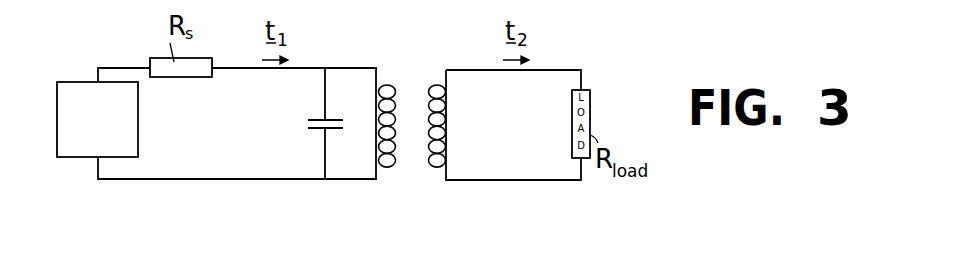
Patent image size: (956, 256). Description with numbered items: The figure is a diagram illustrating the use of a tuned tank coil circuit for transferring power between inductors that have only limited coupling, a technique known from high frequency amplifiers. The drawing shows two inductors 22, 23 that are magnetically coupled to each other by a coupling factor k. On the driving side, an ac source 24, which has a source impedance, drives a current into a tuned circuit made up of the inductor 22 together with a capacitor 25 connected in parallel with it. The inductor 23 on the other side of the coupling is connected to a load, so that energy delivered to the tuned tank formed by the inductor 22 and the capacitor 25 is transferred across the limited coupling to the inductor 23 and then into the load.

The inductor 22 is at (389, 168).
The inductor 23 is at (433, 168).
The ac source 24 is at (140, 120).
The capacitor 25 is at (317, 123).